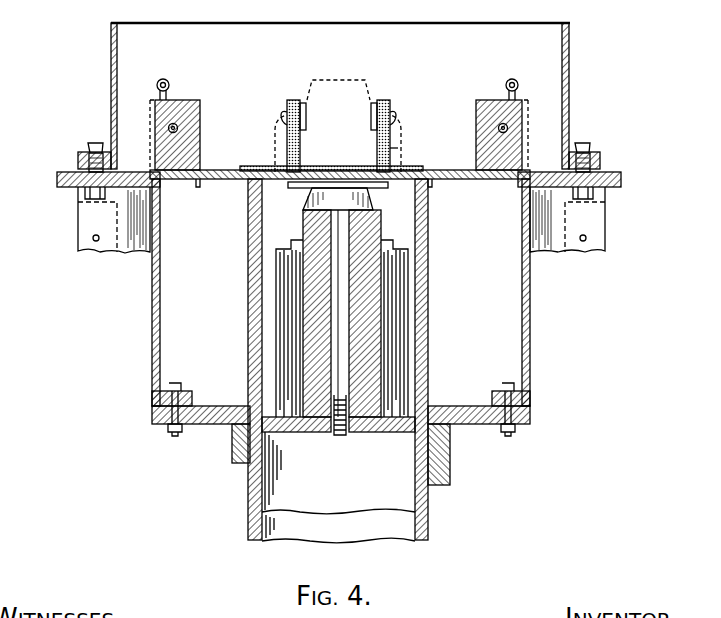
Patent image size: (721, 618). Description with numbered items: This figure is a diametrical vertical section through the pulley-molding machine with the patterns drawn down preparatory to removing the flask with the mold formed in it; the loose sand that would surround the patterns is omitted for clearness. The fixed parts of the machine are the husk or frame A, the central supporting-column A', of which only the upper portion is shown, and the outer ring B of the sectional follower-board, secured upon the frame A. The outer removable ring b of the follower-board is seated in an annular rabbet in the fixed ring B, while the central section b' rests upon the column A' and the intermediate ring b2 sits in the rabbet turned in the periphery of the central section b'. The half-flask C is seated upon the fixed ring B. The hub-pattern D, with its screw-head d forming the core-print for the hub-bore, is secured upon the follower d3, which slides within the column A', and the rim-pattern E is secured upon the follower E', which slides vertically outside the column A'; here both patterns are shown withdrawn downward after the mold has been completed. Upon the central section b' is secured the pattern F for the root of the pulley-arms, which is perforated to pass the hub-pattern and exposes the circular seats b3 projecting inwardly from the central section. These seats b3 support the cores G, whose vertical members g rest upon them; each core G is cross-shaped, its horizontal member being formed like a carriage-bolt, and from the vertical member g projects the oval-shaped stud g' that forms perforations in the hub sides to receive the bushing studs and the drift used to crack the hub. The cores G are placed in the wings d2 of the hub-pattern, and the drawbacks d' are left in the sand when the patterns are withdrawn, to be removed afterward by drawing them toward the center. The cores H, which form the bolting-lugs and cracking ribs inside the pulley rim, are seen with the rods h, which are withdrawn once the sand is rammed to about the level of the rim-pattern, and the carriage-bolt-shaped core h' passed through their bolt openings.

The half-flask C is at (579, 24).
The outer ring of the sectional follower-board B is at (57, 179).
The outer removable ring of the follower-board b is at (328, 160).
The central section of the follower-board b' is at (442, 195).
The intermediate ring of the follower-board b2 is at (198, 187).
The circular seats of the central section b3 is at (303, 170).
The husk or frame A is at (326, 220).
The central supporting-column A' is at (355, 359).
The rim-pattern E is at (201, 321).
The follower for the rim-pattern E' is at (479, 332).
The hub-pattern D is at (303, 216).
The screw-head of the hub-pattern d is at (338, 199).
The drawbacks d' is at (338, 118).
The wings of the hub-pattern d2 is at (403, 240).
The follower for the hub-pattern d3 is at (338, 487).
The pattern for the root of the pulley-arms F is at (275, 167).
The cores G is at (287, 108).
The vertical member of the core g is at (333, 139).
The oval-shaped stud g' is at (338, 137).
The cores for the rim lugs H is at (176, 104).
The rods h is at (338, 87).
The core in the shape of a carriage-bolt h' is at (338, 123).